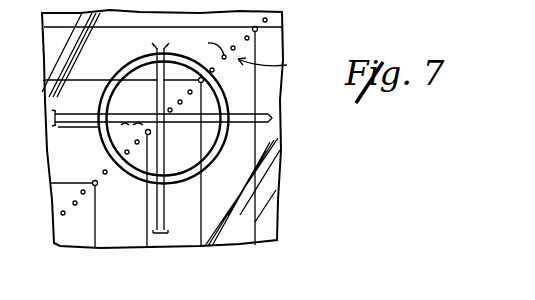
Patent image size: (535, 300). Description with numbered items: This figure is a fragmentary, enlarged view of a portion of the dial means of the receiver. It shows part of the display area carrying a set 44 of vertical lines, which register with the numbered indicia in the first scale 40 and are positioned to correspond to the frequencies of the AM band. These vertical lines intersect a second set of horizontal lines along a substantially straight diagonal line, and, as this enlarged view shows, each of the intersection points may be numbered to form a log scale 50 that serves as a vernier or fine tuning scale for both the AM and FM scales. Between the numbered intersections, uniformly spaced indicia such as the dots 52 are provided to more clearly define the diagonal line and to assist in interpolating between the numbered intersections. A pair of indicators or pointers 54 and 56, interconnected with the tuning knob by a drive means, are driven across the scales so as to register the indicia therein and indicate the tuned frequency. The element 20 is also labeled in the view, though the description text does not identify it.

The panel board 20 is at (101, 189).
The guide line 40 is at (123, 156).
The panel 44 is at (267, 190).
The perforations 50 is at (253, 26).
The arrow indicator 52 is at (235, 50).
The vertical bar 54 is at (168, 210).
The horizontal bar 56 is at (245, 115).